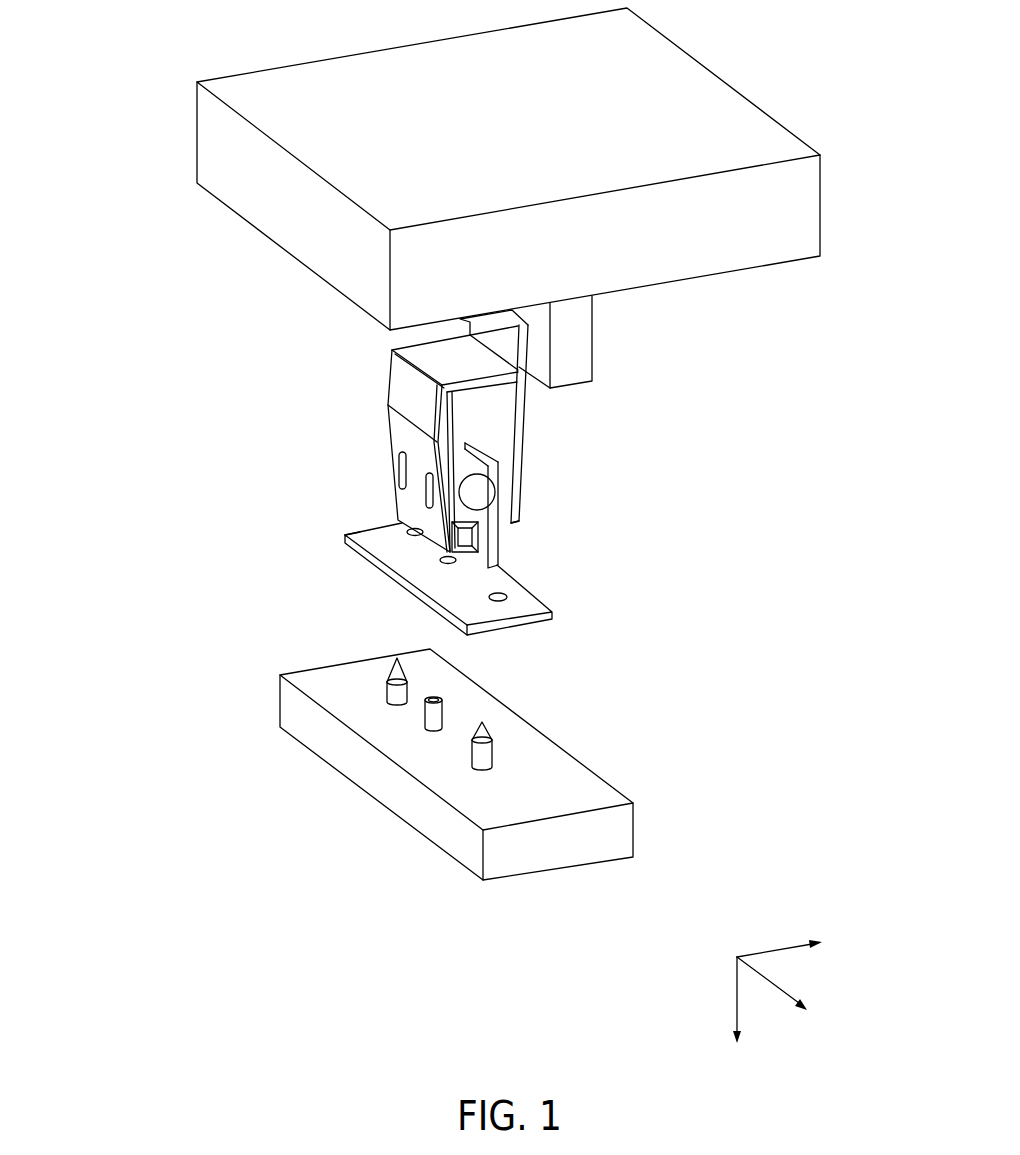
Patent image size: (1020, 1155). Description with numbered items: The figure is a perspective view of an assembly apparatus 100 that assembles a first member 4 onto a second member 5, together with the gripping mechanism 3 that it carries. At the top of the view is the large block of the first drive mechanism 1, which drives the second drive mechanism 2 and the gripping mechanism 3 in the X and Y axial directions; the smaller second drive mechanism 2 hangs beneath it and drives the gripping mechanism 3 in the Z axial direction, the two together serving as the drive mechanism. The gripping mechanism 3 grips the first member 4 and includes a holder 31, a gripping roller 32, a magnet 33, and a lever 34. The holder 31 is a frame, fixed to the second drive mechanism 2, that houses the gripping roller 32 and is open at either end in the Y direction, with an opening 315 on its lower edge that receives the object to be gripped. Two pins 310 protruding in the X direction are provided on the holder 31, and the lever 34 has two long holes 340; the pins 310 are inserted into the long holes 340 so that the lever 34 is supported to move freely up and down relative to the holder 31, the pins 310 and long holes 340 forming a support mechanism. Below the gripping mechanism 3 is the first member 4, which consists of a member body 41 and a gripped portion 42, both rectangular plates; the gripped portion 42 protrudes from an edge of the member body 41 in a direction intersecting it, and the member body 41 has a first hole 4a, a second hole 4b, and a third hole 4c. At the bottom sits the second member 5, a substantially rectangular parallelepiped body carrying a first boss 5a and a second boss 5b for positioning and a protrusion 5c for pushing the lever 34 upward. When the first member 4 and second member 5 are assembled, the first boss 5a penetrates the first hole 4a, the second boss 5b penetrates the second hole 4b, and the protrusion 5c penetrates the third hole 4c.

The assembly apparatus 100 is at (145, 307).
The first drive mechanism 1 is at (822, 205).
The second drive mechanism 2 is at (592, 337).
The gripping mechanism 3 is at (292, 413).
The holder 31 is at (527, 420).
The gripping roller 32 is at (490, 492).
The magnet 33 is at (460, 552).
The lever 34 is at (392, 352).
The pins 310 is at (390, 456).
The opening 315 is at (504, 533).
The long holes 340 is at (397, 470).
The first member 4 is at (302, 568).
The member body 41 is at (355, 533).
The gripped portion 42 is at (500, 553).
The first hole 4a is at (403, 521).
The second hole 4b is at (503, 601).
The third hole 4c is at (443, 564).
The second member 5 is at (283, 685).
The first boss 5a is at (394, 670).
The second boss 5b is at (486, 730).
The protrusion 5c is at (426, 711).